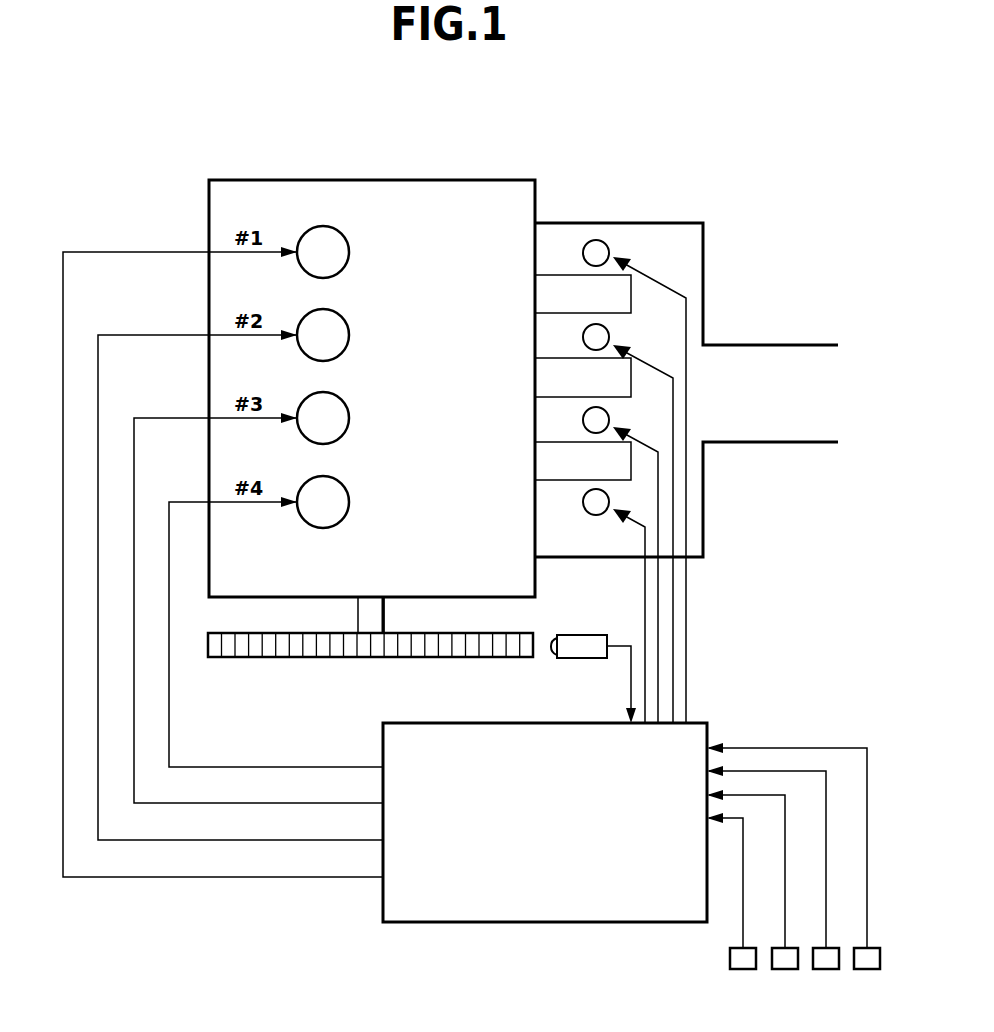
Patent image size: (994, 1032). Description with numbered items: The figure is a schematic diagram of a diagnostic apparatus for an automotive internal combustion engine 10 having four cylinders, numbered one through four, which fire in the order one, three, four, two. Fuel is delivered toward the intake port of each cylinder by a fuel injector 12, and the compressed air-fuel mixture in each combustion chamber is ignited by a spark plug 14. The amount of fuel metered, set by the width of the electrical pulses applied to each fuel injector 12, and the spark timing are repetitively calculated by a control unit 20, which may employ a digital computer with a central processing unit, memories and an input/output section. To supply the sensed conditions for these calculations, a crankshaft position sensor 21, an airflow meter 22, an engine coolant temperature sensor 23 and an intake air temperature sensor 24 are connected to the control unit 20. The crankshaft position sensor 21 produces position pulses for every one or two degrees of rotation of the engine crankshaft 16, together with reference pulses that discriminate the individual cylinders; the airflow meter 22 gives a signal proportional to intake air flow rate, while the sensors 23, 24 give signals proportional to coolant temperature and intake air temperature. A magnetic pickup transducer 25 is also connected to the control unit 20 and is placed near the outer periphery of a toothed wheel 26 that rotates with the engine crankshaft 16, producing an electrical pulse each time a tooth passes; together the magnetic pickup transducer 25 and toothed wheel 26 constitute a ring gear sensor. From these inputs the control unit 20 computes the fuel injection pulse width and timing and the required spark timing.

The internal combustion engine 10 is at (373, 180).
The fuel injector 12 is at (609, 250).
The spark plug 14 is at (349, 252).
The engine crankshaft 16 is at (384, 618).
The control unit 20 is at (543, 922).
The crankshaft position sensor 21 is at (743, 969).
The airflow meter 22 is at (785, 969).
The engine coolant temperature sensor 23 is at (826, 969).
The intake air temperature sensor 24 is at (867, 969).
The magnetic pickup transducer 25 is at (582, 635).
The toothed wheel 26 is at (243, 657).